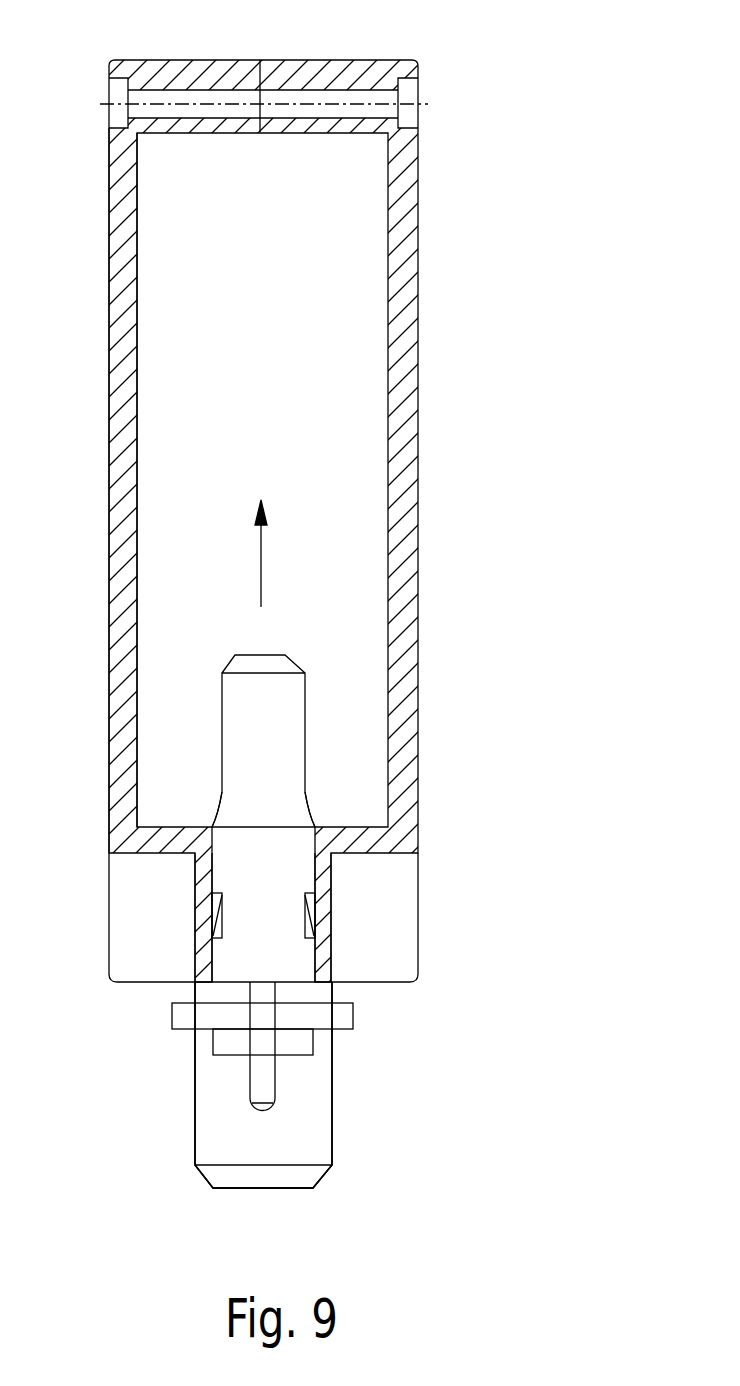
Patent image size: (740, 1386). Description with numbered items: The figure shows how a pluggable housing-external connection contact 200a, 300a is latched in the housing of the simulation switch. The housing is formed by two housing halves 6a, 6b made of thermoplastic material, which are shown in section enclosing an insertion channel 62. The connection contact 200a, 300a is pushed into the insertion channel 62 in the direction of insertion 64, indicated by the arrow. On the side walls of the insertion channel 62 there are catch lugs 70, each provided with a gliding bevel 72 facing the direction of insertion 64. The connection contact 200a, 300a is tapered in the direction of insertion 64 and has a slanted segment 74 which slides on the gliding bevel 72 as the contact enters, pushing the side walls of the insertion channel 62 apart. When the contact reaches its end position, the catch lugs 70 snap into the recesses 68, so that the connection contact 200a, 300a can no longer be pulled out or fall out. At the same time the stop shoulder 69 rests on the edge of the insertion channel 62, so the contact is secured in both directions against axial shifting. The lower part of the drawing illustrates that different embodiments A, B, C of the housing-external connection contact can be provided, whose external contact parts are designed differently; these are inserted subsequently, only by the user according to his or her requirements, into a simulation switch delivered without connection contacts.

The housing half 6a is at (402, 303).
The housing half 6b is at (128, 309).
The insertion channel 62 is at (312, 866).
The direction of insertion 64 is at (264, 568).
The recess 68 is at (213, 928).
The stop shoulder 69 is at (198, 977).
The catch lug 70 is at (213, 903).
The gliding bevel 72 is at (311, 912).
The slanted segment 74 is at (217, 812).
The embodiment of housing-external connection contact A is at (300, 1133).
The embodiment of housing-external connection contact B is at (263, 1080).
The embodiment of housing-external connection contact C is at (346, 1015).
The connection contact 200a is at (345, 1093).
The connection contact 300a is at (263, 1085).